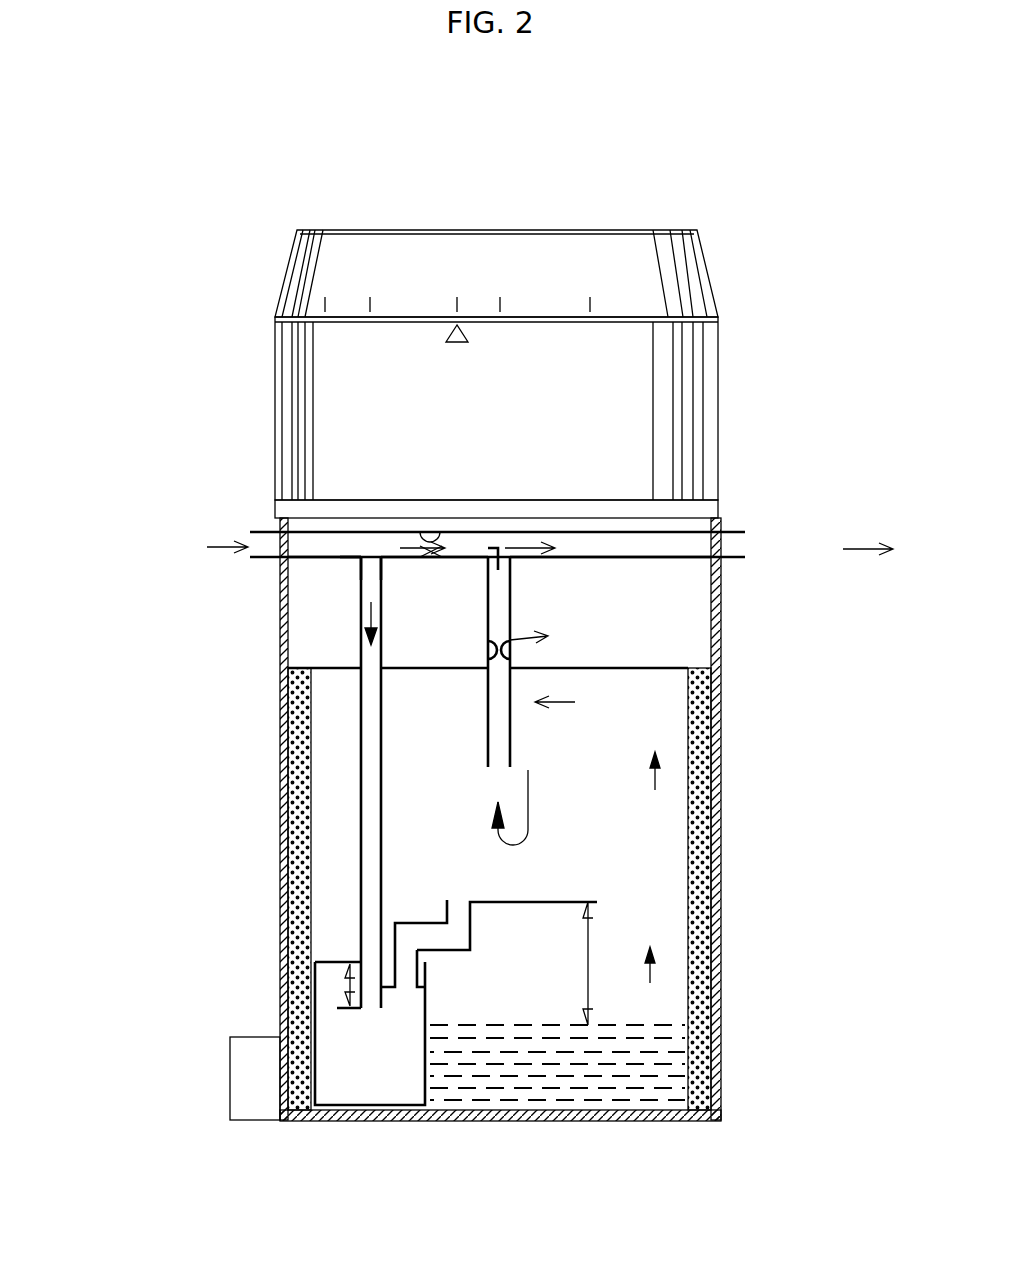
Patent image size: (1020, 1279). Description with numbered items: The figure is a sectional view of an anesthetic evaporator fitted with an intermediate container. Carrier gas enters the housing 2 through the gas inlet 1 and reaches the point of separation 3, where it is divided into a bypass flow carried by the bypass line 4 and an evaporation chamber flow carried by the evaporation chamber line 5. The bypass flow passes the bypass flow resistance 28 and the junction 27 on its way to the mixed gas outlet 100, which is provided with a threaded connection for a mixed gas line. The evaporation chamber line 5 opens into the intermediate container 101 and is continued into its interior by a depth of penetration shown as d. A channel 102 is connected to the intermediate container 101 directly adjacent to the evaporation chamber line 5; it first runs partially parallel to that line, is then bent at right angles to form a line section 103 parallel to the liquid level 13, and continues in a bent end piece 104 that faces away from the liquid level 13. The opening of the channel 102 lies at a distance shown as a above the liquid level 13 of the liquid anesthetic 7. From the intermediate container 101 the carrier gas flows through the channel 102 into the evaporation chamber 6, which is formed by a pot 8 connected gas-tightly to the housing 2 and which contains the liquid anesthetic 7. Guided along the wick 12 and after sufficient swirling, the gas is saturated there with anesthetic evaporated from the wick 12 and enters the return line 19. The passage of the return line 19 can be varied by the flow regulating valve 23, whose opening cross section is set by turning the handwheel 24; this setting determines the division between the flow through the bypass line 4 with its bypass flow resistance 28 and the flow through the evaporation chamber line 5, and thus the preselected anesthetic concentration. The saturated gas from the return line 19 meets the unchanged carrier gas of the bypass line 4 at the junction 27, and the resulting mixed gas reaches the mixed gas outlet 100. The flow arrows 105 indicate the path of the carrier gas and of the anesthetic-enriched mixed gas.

The gas inlet 1 is at (295, 547).
The housing 2 is at (596, 414).
The point of separation 3 is at (372, 556).
The bypass line 4 is at (368, 556).
The evaporation chamber line 5 is at (368, 718).
The evaporation chamber 6 is at (634, 877).
The liquid anesthetic 7 is at (637, 1087).
The pot 8 is at (722, 944).
The wick 12 is at (695, 790).
The liquid level 13 is at (620, 1025).
The return line 19 is at (502, 605).
The flow regulating valve 23 is at (468, 653).
The handwheel 24 is at (706, 287).
The junction 27 is at (500, 548).
The bypass flow resistance 28 is at (428, 530).
The mixed gas outlet 100 is at (742, 550).
The intermediate container 101 is at (313, 1065).
The channel 102 is at (457, 902).
The line section 103 is at (410, 967).
The bent end piece 104 is at (547, 900).
The flow arrows 105 is at (198, 547).